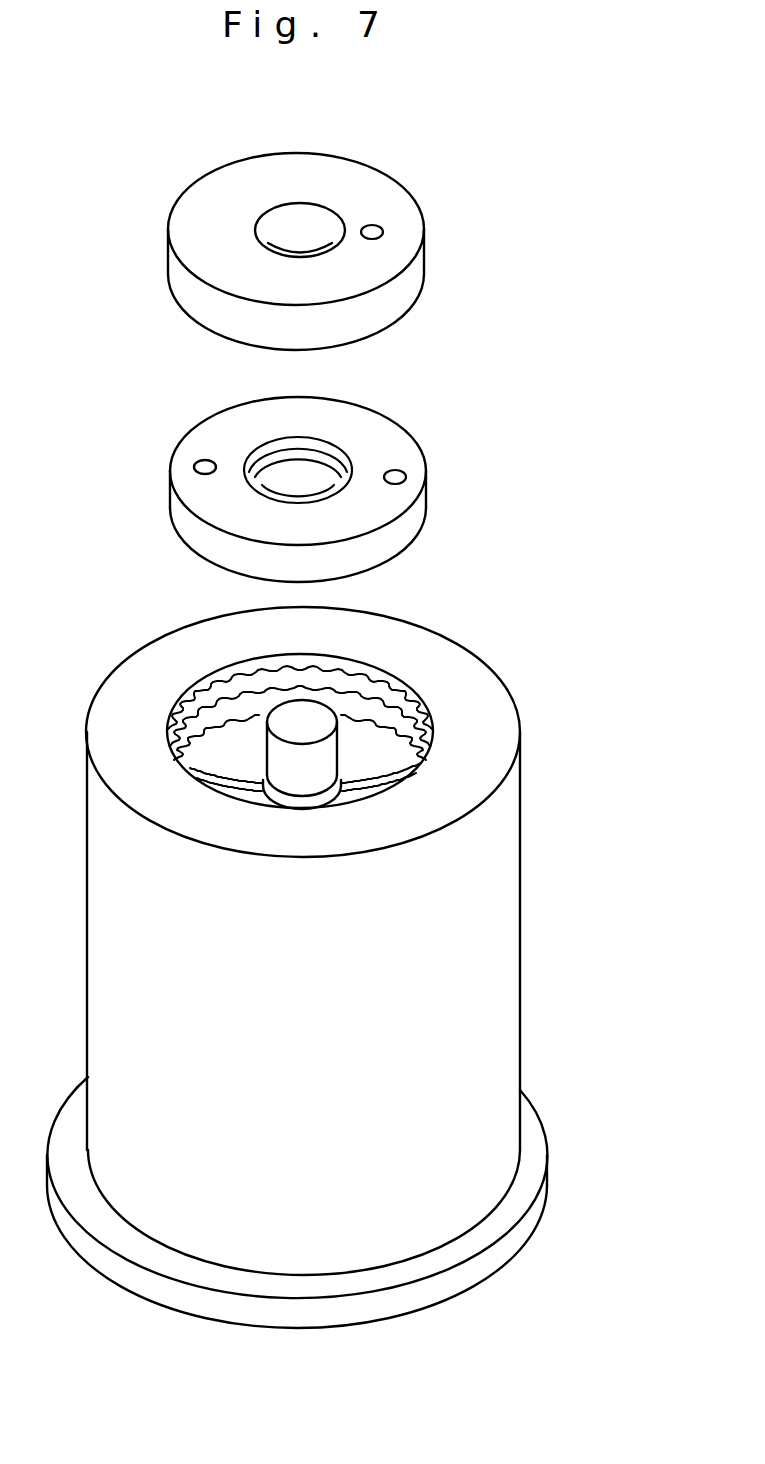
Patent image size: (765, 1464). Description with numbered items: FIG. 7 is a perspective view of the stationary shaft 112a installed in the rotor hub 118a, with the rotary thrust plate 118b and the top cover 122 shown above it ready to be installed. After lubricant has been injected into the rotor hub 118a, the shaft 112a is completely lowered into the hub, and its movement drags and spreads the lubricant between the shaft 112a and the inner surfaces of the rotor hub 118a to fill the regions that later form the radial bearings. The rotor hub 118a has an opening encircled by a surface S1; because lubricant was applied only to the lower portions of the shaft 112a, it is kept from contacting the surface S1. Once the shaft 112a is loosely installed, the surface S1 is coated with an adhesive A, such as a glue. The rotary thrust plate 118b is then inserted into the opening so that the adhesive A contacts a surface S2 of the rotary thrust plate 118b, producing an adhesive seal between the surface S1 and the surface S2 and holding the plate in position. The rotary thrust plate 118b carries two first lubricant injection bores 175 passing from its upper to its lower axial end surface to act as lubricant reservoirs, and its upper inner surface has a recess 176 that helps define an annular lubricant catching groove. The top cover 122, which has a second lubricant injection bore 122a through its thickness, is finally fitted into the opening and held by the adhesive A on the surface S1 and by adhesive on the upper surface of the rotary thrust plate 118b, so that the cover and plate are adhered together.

The top cover 122 is at (415, 275).
The second lubricant injection bore 122a is at (376, 224).
The rotary thrust plate 118b is at (403, 447).
The recess 176 is at (317, 458).
The first lubricant injection bore 175 is at (398, 477).
The surface of the rotary thrust plate S2 is at (397, 543).
The rotor hub 118a is at (478, 977).
The surface encircling the rotor hub opening S1 is at (407, 733).
The adhesive A is at (229, 733).
The shaft 112a is at (323, 763).